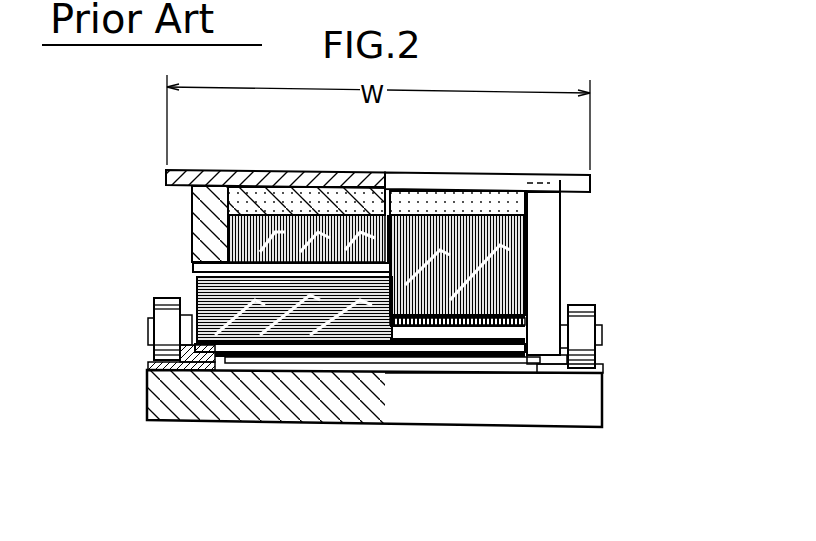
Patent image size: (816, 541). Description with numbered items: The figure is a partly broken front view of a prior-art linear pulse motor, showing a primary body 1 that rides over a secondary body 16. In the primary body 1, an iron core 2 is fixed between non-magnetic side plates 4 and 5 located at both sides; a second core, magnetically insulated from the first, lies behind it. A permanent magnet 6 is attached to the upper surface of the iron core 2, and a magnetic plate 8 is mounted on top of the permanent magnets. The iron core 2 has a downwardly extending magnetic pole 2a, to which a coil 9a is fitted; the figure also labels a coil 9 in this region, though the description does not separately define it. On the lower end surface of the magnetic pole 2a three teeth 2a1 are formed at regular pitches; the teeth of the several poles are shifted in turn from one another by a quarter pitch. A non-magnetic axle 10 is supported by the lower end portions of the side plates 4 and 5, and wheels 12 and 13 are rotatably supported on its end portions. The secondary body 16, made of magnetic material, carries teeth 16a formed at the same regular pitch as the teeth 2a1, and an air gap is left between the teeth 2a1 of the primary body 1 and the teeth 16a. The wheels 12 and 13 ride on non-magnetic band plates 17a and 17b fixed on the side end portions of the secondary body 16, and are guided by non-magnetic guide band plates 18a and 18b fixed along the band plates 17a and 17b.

The primary body 1 is at (583, 262).
The iron core 2 is at (453, 237).
The magnetic pole 2a is at (260, 358).
The teeth 2a1 is at (310, 350).
The side plate 4 is at (200, 217).
The side plate 5 is at (545, 233).
The permanent magnet 6 is at (312, 193).
The magnetic plate 8 is at (427, 180).
The mounting plate 9 is at (212, 365).
The coil 9a is at (353, 328).
The axle 10 is at (603, 335).
The wheel 12 is at (163, 315).
The wheel 13 is at (580, 318).
The secondary body 16 is at (471, 407).
The teeth 16a is at (423, 373).
The band plate 17a is at (150, 365).
The band plate 17b is at (565, 373).
The guide band plate 18a is at (152, 349).
The guide band plate 18b is at (540, 365).